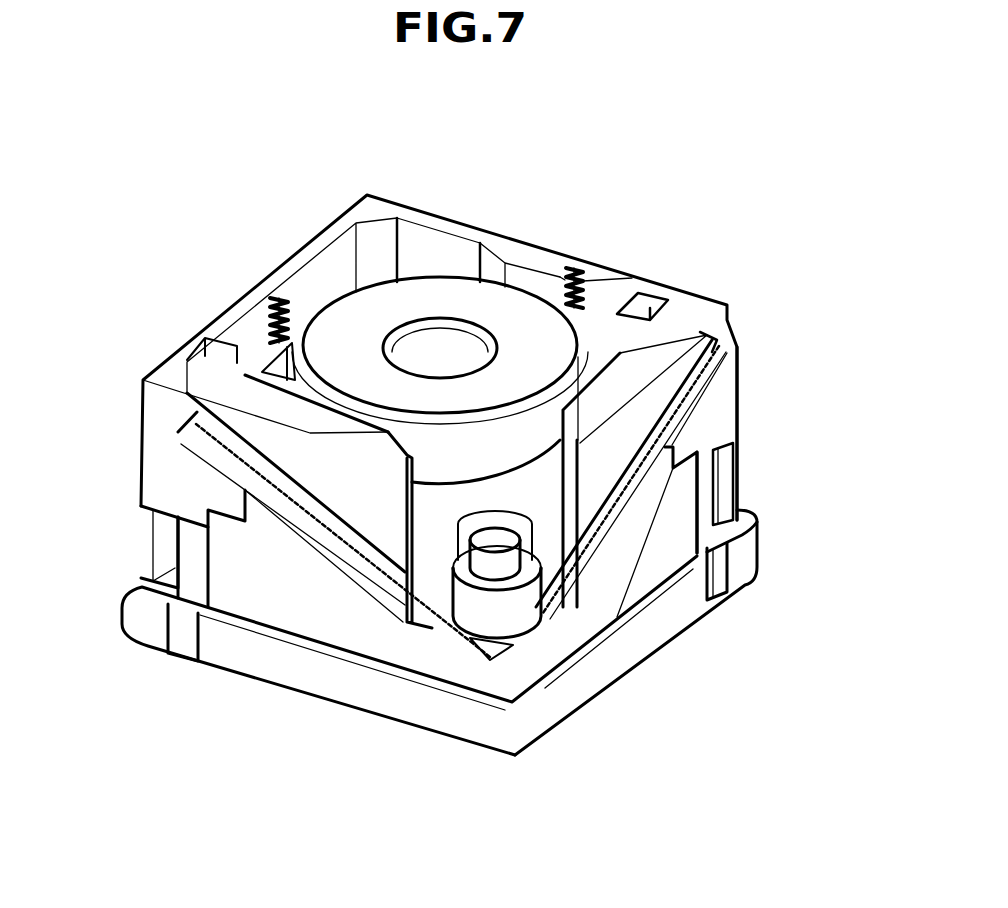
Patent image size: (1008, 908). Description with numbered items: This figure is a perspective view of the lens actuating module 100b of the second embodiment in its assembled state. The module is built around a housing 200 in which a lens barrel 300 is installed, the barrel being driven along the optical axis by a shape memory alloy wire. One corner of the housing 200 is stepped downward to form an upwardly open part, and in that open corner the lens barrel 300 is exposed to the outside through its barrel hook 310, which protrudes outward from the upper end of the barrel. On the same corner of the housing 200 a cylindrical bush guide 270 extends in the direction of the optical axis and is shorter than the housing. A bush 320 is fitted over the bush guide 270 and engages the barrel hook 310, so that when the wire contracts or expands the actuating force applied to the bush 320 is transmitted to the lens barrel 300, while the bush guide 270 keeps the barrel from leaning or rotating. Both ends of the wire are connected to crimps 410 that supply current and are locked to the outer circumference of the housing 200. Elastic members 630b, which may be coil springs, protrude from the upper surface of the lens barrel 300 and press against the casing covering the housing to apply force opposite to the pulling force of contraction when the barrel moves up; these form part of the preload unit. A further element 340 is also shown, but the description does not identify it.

The lens actuating module 100b is at (155, 144).
The housing 200 is at (157, 360).
The bush guide 270 is at (443, 618).
The lens barrel 300 is at (336, 299).
The barrel hook 310 is at (532, 540).
The bush 320 is at (482, 610).
The stopper protrusion 340 is at (655, 308).
The crimps 410 is at (720, 403).
The elastic members 630b is at (583, 263).